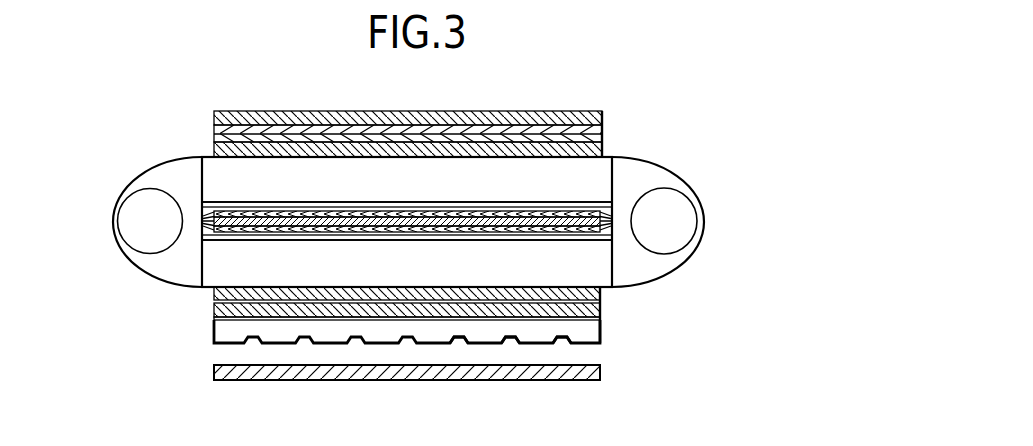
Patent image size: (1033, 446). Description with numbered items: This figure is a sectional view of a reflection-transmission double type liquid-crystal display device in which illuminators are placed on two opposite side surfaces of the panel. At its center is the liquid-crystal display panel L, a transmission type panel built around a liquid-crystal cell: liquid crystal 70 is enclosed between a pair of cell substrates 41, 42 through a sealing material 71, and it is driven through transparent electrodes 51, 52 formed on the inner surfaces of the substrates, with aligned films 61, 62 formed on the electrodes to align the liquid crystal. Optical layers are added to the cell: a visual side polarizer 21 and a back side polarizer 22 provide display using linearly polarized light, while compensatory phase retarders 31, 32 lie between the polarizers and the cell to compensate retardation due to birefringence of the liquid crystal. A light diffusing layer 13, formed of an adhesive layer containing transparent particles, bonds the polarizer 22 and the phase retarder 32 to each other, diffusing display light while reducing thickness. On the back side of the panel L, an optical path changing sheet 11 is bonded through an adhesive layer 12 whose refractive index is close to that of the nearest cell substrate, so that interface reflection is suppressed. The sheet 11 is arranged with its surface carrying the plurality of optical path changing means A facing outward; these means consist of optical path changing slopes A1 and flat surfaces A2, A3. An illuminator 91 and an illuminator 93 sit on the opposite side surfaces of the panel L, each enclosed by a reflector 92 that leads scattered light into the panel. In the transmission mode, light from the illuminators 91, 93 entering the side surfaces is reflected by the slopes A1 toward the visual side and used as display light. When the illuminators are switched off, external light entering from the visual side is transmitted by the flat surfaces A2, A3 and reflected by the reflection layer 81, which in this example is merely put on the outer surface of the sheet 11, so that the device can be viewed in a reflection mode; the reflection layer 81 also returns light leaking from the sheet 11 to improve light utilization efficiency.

The liquid-crystal display panel L is at (189, 126).
The optical path changing sheet 11 is at (600, 340).
The adhesive layer 12 is at (602, 322).
The light diffusing layer 13 is at (540, 130).
The visual side polarizer 21 is at (602, 310).
The back side polarizer 22 is at (488, 113).
The phase retarder 31 is at (602, 292).
The phase retarder 32 is at (578, 148).
The cell substrate 41 is at (602, 268).
The cell substrate 42 is at (597, 162).
The transparent electrode 51 is at (618, 240).
The transparent electrode 52 is at (617, 200).
The aligned film 61 is at (618, 232).
The aligned film 62 is at (618, 212).
The liquid crystal 70 is at (297, 226).
The sealing material 71 is at (620, 222).
The reflection layer 81 is at (388, 378).
The illuminator 91 is at (143, 243).
The reflector 92 is at (143, 170).
The illuminator 93 is at (690, 218).
The optical path changing means A is at (497, 352).
The optical path changing slope A1 is at (460, 343).
The flat surface A2 is at (512, 343).
The flat surface A3 is at (547, 343).